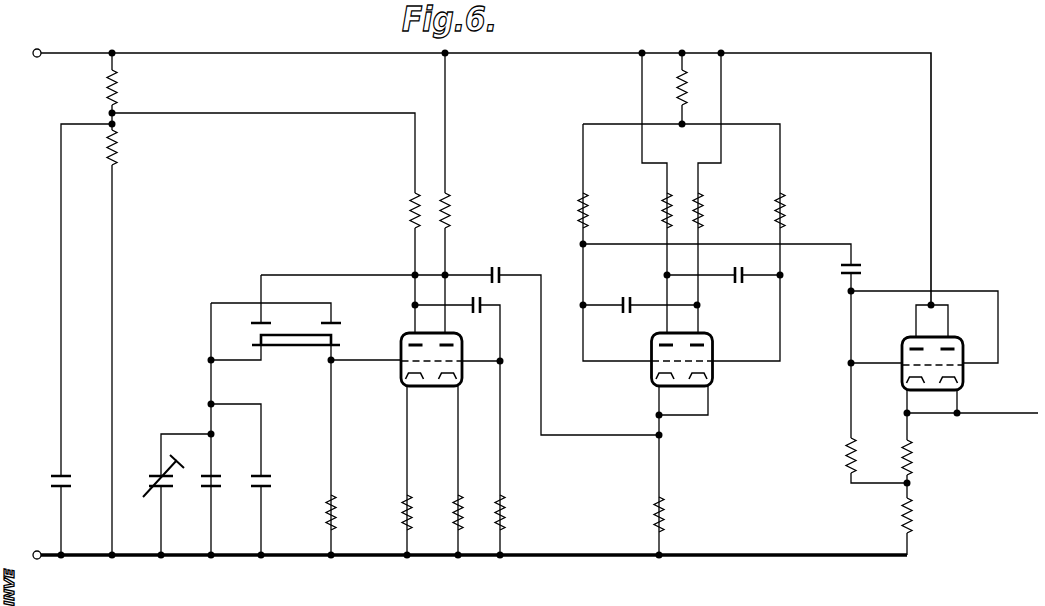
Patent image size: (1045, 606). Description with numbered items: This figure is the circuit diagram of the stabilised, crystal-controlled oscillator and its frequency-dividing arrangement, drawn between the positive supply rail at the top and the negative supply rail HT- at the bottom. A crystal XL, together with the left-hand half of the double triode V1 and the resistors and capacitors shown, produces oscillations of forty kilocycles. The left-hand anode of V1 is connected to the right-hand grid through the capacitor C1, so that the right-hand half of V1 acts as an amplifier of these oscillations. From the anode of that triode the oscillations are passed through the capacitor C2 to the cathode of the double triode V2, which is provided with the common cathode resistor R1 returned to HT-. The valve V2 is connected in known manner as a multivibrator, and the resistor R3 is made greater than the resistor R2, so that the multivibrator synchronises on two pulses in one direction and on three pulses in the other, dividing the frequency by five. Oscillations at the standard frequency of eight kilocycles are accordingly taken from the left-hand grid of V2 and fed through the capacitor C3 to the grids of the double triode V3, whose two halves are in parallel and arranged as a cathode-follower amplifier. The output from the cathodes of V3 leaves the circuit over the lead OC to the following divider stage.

The negative high-tension supply terminal HT- is at (467, 544).
The crystal XL is at (312, 335).
The capacitor C1 is at (464, 298).
The capacitor C2 is at (499, 262).
The capacitor C3 is at (836, 276).
The double triode V1 is at (445, 357).
The double triode V2 is at (696, 357).
The double triode V3 is at (946, 362).
The common cathode resistor R1 is at (673, 514).
The resistor R2 is at (599, 210).
The resistor R3 is at (766, 210).
The lead OC is at (972, 425).